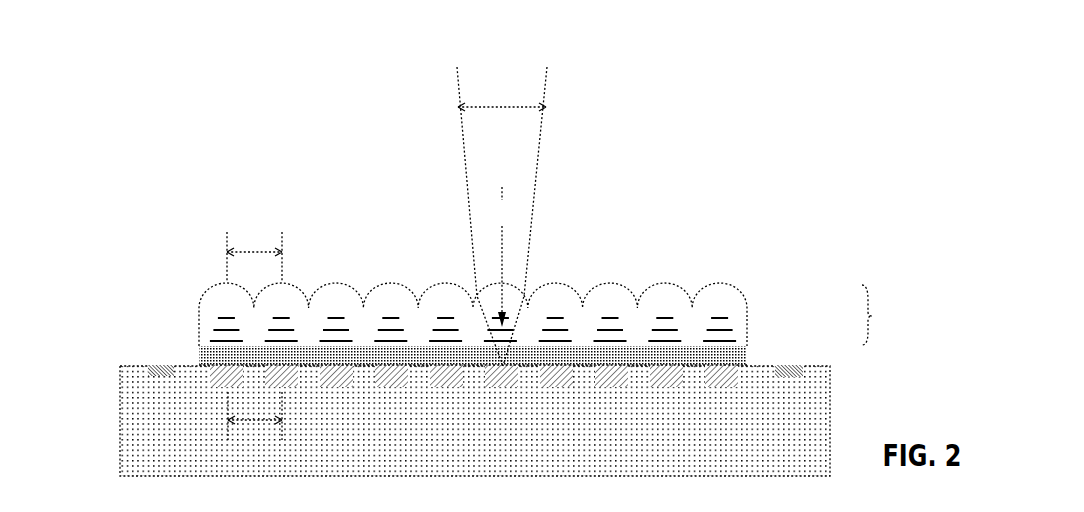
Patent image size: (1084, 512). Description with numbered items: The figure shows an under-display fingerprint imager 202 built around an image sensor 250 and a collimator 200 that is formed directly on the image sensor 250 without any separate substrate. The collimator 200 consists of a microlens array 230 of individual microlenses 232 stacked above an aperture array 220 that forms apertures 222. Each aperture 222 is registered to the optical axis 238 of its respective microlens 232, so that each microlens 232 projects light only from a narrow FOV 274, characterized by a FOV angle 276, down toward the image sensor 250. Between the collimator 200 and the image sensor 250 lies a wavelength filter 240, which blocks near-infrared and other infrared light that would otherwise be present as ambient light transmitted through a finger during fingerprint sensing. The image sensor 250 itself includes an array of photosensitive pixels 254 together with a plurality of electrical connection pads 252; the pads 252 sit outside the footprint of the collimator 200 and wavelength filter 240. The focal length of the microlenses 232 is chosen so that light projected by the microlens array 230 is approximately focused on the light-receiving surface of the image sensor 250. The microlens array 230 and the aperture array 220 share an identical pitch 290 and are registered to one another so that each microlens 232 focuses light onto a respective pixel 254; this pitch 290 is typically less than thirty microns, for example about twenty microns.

The collimator 200 is at (886, 315).
The under-display fingerprint imager 202 is at (190, 112).
The aperture array 220 is at (776, 330).
The aperture 222 is at (518, 288).
The microlens array 230 is at (776, 293).
The microlens 232 is at (490, 285).
The optical axis 238 is at (502, 257).
The wavelength filter 240 is at (200, 362).
The image sensor 250 is at (120, 436).
The electrical connection pad 252 is at (160, 378).
The photosensitive pixel 254 is at (505, 389).
The narrow FOV 274 is at (558, 171).
The FOV angle 276 is at (490, 107).
The pitch 290 is at (255, 252).